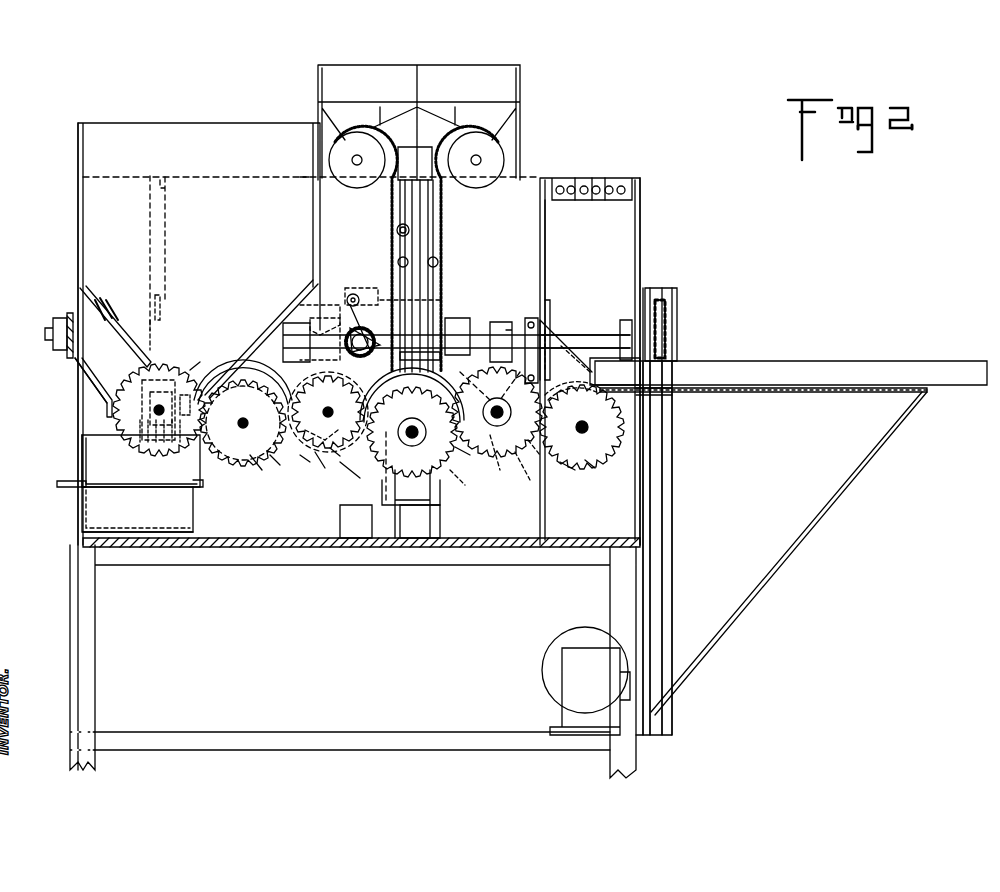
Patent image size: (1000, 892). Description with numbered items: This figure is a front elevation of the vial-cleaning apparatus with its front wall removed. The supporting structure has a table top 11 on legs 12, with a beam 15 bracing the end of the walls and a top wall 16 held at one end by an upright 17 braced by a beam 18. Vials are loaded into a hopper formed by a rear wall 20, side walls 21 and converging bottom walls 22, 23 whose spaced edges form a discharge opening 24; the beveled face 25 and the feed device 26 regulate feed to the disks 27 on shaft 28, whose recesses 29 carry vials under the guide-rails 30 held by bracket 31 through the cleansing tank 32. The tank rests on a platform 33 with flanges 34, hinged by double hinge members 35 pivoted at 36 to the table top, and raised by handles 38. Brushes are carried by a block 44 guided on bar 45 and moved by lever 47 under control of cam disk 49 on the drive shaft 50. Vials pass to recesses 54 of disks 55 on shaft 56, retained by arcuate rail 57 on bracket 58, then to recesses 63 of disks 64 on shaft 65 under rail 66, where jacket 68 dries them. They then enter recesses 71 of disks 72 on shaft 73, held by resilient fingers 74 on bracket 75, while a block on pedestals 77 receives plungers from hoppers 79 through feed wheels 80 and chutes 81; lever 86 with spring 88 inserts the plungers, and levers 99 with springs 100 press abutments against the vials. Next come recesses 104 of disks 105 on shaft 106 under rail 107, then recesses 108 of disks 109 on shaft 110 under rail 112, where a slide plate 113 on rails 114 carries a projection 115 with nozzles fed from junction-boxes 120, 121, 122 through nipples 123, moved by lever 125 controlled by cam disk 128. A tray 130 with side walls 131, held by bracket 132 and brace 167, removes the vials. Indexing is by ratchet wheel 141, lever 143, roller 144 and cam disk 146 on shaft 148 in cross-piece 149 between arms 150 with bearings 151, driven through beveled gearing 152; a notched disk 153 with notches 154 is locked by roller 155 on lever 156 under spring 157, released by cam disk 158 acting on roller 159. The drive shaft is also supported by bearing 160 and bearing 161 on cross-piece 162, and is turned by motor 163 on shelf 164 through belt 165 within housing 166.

The table top 11 is at (275, 548).
The legs 12 is at (88, 648).
The beam 15 is at (62, 352).
The top wall 16 is at (543, 178).
The upright 17 is at (640, 252).
The beam 18 is at (650, 440).
The hopper rear wall 20 is at (195, 128).
The side walls 21 is at (78, 190).
The bottom wall 22 is at (100, 312).
The bottom wall 23 is at (262, 330).
The discharge opening 24 is at (185, 360).
The beveled face 25 is at (150, 345).
The feed device 26 is at (126, 356).
The disks 27 is at (193, 372).
The shaft 28 is at (157, 407).
The recesses 29 is at (170, 380).
The guide-rails 30 is at (135, 452).
The bracket 31 is at (78, 390).
The tank 32 is at (80, 440).
The platform 33 is at (75, 490).
The vertical flanges 34 is at (200, 482).
The double hinge members 35 is at (190, 504).
The hinge pivot portion 36 is at (190, 526).
The handles 38 is at (63, 480).
The block 44 is at (166, 407).
The bar 45 is at (178, 378).
The lever 47 is at (166, 272).
The cam disk 49 is at (155, 308).
The drive shaft 50 is at (570, 342).
The recesses 54 is at (275, 462).
The disks 55 is at (258, 468).
The shaft 56 is at (243, 418).
The arcuate rail 57 is at (283, 386).
The bracket 58 is at (245, 378).
The recesses 63 is at (336, 456).
The disks 64 is at (308, 462).
The shaft 65 is at (323, 412).
The arcuate rail 66 is at (322, 468).
The jacket 68 is at (332, 438).
The recesses 71 is at (470, 455).
The disks 72 is at (352, 472).
The shaft 73 is at (418, 436).
The resilient fingers 74 is at (416, 420).
The bracket 75 is at (390, 428).
The pedestals 77 is at (372, 522).
The hoppers 79 is at (370, 75).
The feed wheels 80 is at (343, 145).
The chutes 81 is at (395, 242).
The lever 86 is at (420, 175).
The spring 88 is at (396, 225).
The levers 99 is at (395, 208).
The spring 100 is at (442, 250).
The recesses 104 is at (525, 470).
The disks 105 is at (496, 458).
The shaft 106 is at (507, 407).
The arcuate rail 107 is at (535, 450).
The recesses 108 is at (588, 468).
The disks 109 is at (560, 462).
The shaft 110 is at (585, 424).
The arcuate rail 112 is at (590, 372).
The slide plate 113 is at (528, 318).
The rails 114 is at (524, 325).
The lateral projection 115 is at (552, 345).
The junction-box 120 is at (560, 185).
The junction-box 121 is at (586, 185).
The junction-box 122 is at (612, 185).
The outlet nipples 123 is at (560, 195).
The lever 125 is at (548, 238).
The cam disk 128 is at (550, 300).
The tray 130 is at (820, 385).
The side walls 131 is at (840, 362).
The bracket 132 is at (655, 395).
The ratchet wheel 141 is at (412, 504).
The lever 143 is at (388, 420).
The roller 144 is at (440, 292).
The cam disk 146 is at (320, 300).
The shaft 148 is at (345, 396).
The cross-piece 149 is at (448, 318).
The arms 150 is at (500, 320).
The bearings 151 is at (492, 300).
The beveled gearing 152 is at (355, 335).
The disk 153 is at (456, 462).
The notches 154 is at (430, 495).
The roller 155 is at (440, 355).
The lever 156 is at (345, 288).
The spring 157 is at (320, 318).
The cam disk 158 is at (318, 402).
The roller 159 is at (360, 295).
The bearing 160 is at (68, 315).
The bearing 161 is at (622, 320).
The cross-piece 162 is at (672, 336).
The reduction-geared motor 163 is at (548, 672).
The shelf 164 is at (332, 745).
The belt 165 is at (672, 592).
The housing 166 is at (668, 468).
The brace 167 is at (860, 458).